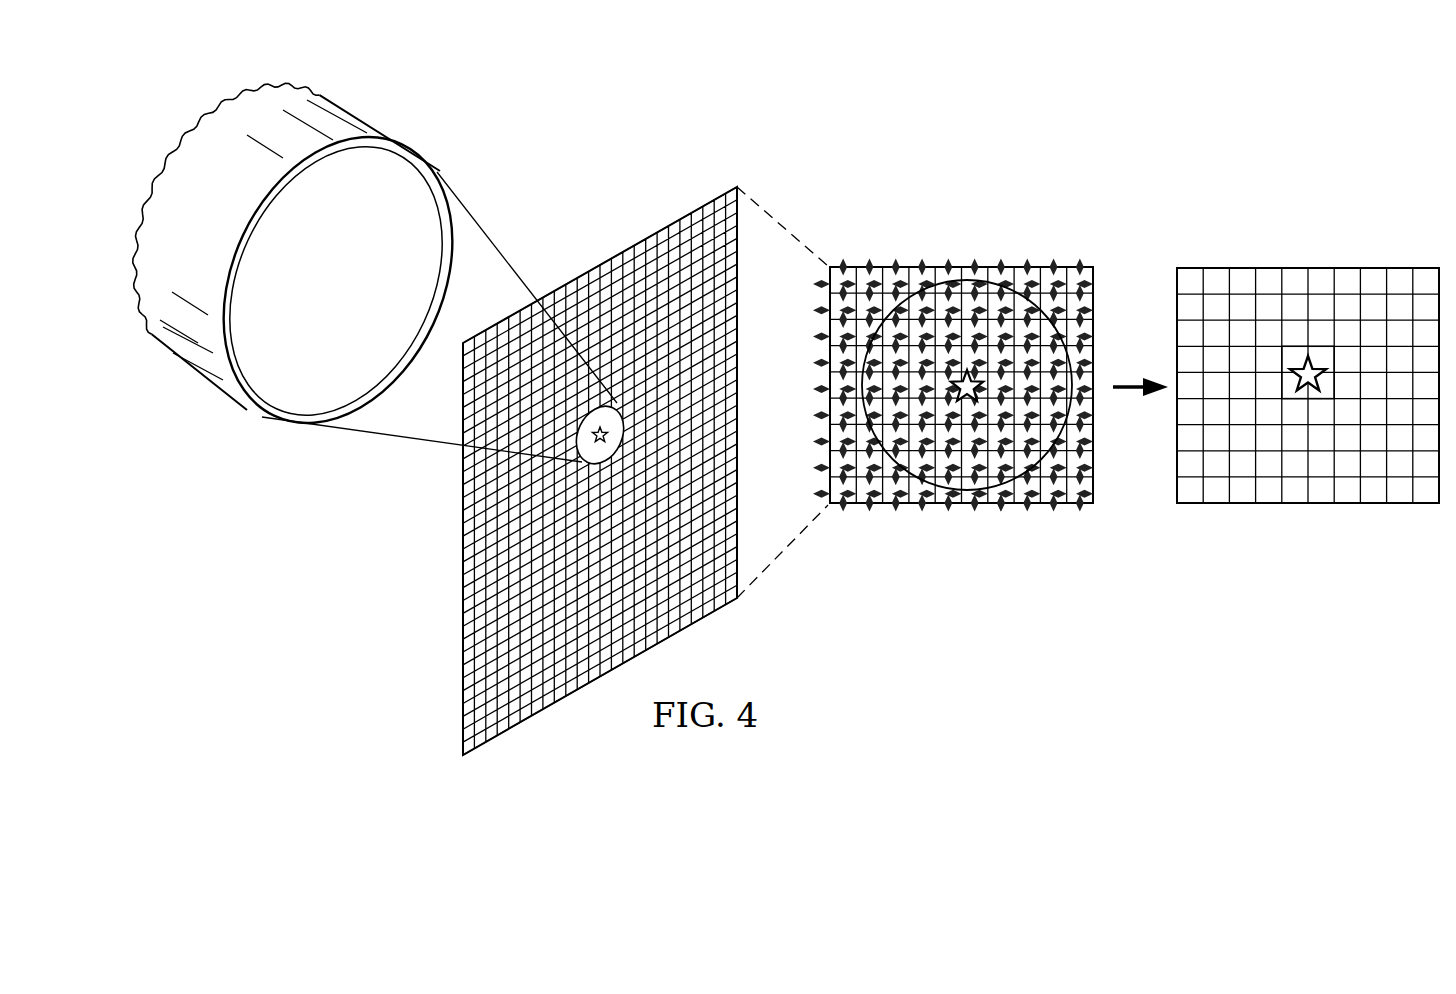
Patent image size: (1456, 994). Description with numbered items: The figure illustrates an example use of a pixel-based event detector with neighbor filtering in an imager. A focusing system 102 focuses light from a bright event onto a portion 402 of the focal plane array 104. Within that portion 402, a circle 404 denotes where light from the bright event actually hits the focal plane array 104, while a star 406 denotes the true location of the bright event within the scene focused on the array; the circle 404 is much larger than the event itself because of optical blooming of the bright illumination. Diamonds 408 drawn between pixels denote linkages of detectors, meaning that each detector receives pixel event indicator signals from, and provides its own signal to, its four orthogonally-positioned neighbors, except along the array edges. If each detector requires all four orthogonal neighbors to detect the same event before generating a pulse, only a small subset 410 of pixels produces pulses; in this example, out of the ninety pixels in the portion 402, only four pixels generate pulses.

The focusing system 102 is at (374, 122).
The focal plane array 104 is at (462, 548).
The portion of the focal plane array 402 is at (962, 368).
The circle 404 is at (926, 282).
The star 406 is at (975, 376).
The diamonds 408 is at (1001, 507).
The subset of pixels 410 is at (1297, 348).